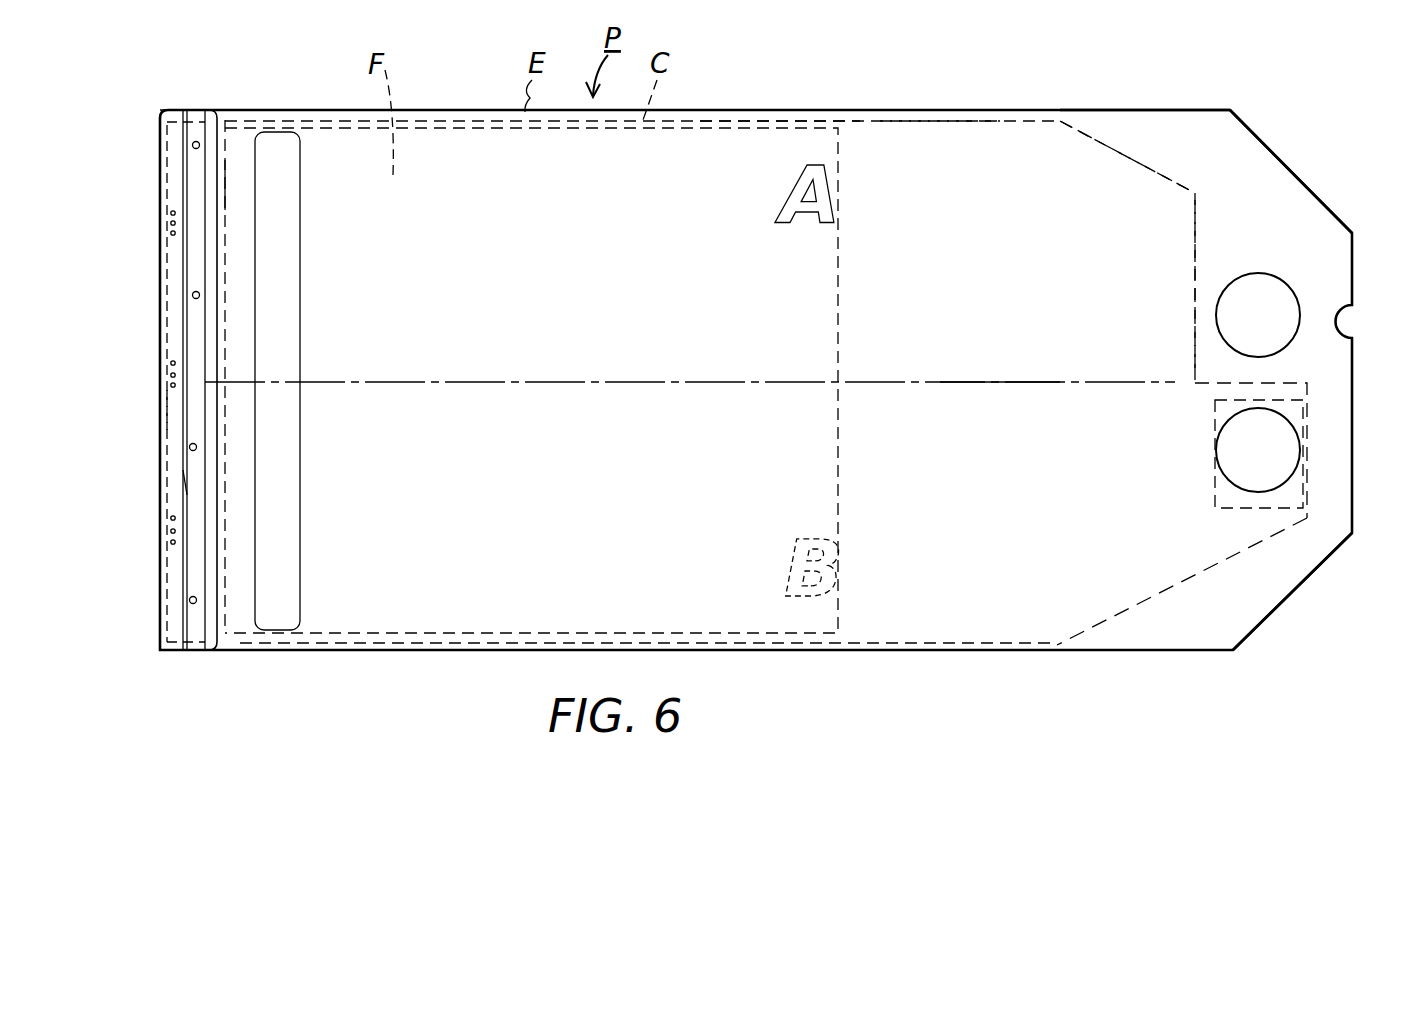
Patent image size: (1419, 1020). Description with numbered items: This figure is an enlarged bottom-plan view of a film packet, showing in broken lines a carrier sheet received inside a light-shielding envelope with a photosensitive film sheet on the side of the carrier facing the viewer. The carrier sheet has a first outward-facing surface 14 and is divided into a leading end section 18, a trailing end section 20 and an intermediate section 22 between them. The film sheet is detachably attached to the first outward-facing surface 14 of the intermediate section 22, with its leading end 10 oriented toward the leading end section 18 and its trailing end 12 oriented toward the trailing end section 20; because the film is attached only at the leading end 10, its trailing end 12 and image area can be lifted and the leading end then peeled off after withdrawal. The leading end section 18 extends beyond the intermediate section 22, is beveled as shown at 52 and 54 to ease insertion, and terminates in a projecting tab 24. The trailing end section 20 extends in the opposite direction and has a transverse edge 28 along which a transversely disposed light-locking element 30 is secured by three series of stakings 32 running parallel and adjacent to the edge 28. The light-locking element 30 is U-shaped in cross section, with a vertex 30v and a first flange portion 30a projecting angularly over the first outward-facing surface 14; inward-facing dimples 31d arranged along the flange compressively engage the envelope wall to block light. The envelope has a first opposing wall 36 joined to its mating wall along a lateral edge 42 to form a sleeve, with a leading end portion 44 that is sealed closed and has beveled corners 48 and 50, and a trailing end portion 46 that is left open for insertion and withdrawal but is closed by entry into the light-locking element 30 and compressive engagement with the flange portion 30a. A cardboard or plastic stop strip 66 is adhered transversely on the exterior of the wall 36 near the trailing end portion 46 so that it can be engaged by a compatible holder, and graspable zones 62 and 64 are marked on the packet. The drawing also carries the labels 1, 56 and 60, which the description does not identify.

The center fold line 1 is at (972, 382).
The leading end 10 is at (842, 307).
The trailing end 12 is at (225, 186).
The first outward-facing surface 14 is at (893, 147).
The leading end section 18 is at (972, 170).
The trailing end section 20 is at (178, 100).
The intermediate section 22 is at (435, 120).
The tab 24 is at (1270, 382).
The transverse edge 28 is at (165, 302).
The light-locking element 30 is at (157, 335).
The vertex 30v is at (157, 408).
The first flange portion 30a is at (195, 484).
The dimples 31d is at (193, 143).
The stakings 32 is at (170, 233).
The first opposing wall 36 is at (690, 350).
The lateral edge 42 is at (778, 112).
The leading end portion 44 is at (1110, 125).
The trailing end portion 46 is at (222, 112).
The beveled corner 48 is at (1330, 553).
The beveled corner 50 is at (1278, 160).
The beveled leading end section 52 is at (1200, 573).
The beveled leading end section 54 is at (1157, 173).
The vertical fold line 56 is at (1153, 275).
The indicia circle 2 60 is at (1248, 508).
The graspable zone 62 is at (1285, 458).
The graspable zone 64 is at (1283, 290).
The stop strip 66 is at (277, 381).